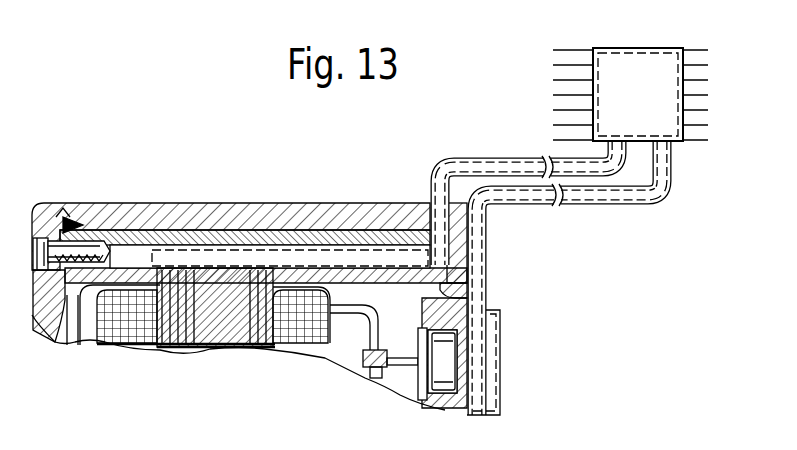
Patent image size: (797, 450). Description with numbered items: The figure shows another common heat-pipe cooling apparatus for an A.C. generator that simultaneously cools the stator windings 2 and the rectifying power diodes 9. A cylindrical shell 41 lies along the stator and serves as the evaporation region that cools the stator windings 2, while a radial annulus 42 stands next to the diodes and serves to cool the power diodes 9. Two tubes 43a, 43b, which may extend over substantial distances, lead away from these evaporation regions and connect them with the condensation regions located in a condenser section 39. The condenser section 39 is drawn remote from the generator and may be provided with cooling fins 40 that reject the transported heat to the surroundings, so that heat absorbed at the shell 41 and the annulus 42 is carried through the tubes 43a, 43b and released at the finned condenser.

The stator windings 2 is at (213, 327).
The power diodes 9 is at (440, 340).
The condenser section 39 is at (640, 65).
The cooling fins 40 is at (558, 62).
The cylindrical shell 41 is at (232, 252).
The radial annulus 42 is at (487, 358).
The tube 43a is at (497, 163).
The tube 43b is at (596, 209).